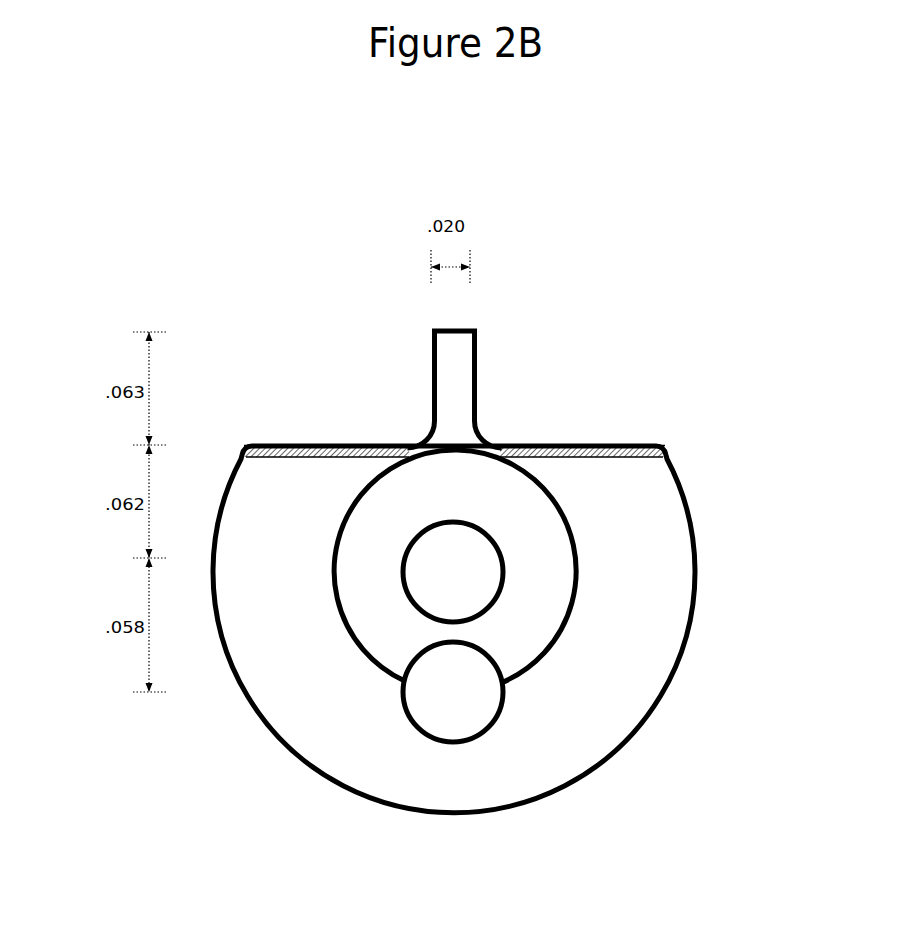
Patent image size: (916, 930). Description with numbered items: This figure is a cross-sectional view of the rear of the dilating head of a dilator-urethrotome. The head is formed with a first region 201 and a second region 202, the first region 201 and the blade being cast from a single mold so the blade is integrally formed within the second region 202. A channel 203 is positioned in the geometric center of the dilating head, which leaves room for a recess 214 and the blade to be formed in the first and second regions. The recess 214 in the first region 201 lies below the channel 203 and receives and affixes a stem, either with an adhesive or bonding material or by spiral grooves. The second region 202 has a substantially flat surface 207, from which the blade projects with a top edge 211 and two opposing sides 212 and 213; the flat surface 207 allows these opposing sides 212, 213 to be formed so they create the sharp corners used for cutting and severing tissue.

The first region 201 is at (657, 653).
The second region 202 is at (650, 515).
The channel 203 is at (485, 587).
The flat surface 207 is at (640, 443).
The top edge 211 is at (457, 323).
The opposing side 212 is at (432, 380).
The opposing side 213 is at (477, 383).
The recess 214 is at (482, 722).